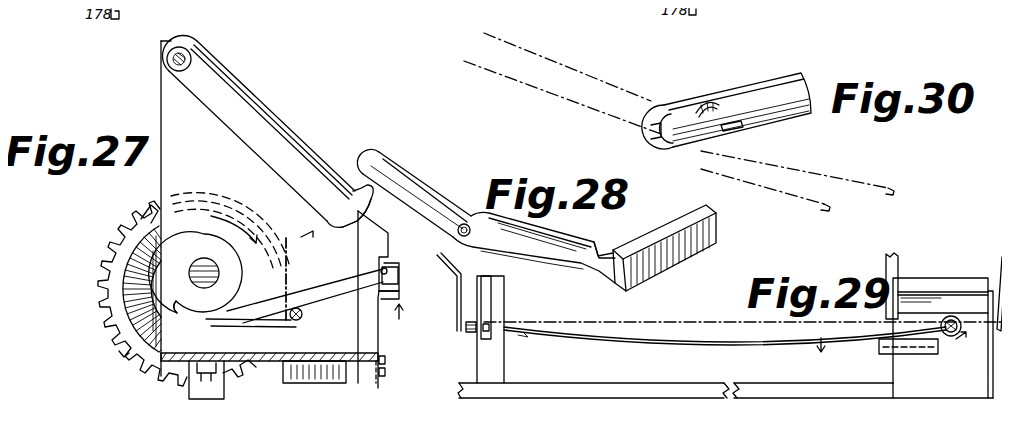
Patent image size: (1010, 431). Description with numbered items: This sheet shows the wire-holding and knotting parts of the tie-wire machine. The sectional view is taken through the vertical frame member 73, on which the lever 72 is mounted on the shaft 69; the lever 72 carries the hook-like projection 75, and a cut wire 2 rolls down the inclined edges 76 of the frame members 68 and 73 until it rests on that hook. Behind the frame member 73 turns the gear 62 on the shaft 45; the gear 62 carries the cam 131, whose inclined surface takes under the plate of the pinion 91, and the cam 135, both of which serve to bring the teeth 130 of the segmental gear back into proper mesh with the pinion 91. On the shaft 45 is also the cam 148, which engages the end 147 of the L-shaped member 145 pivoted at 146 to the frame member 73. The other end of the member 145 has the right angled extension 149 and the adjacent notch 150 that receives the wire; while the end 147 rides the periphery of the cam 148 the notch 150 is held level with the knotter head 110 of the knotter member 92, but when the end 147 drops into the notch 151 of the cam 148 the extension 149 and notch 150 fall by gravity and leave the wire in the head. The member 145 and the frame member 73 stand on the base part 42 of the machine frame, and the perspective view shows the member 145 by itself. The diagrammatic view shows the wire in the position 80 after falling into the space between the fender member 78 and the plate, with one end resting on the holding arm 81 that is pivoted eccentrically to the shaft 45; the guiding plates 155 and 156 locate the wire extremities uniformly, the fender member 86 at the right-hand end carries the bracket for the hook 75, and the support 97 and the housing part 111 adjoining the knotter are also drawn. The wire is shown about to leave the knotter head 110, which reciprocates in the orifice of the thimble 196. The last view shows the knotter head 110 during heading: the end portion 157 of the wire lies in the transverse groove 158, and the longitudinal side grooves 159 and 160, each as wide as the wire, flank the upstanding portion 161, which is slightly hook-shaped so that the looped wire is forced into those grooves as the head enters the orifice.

In FIG. 27, the wire 2 is at (384, 266).
In FIG. 29, the wire 2 is at (672, 342).
In FIG. 30, the wire 2 is at (576, 62).
In FIG. 27, the base plate 42 is at (300, 358).
In FIG. 29, the base plate 42 is at (603, 388).
In FIG. 27, the shaft 45 is at (210, 266).
In FIG. 27, the gear 62 is at (126, 354).
In FIG. 29, the frame member 68 is at (478, 358).
In FIG. 27, the shaft 69 is at (188, 53).
In FIG. 27, the lever 72 is at (232, 102).
In FIG. 27, the vertical frame member 73 is at (165, 106).
In FIG. 29, the vertical frame member 73 is at (905, 283).
In FIG. 27, the hook-like projection 75 is at (364, 200).
In FIG. 27, the inclined edges 76 is at (282, 130).
In FIG. 29, the fender member 78 is at (490, 293).
In FIG. 29, the wire position 80 is at (700, 312).
In FIG. 29, the holding arm 81 is at (467, 332).
In FIG. 29, the fender member 86 is at (884, 265).
In FIG. 27, the pinion 91 is at (310, 272).
In FIG. 30, the knotter member 92 is at (800, 82).
In FIG. 29, the support 97 is at (900, 376).
In FIG. 27, the knotter head 110 is at (388, 264).
In FIG. 29, the knotter head 110 is at (952, 316).
In FIG. 30, the knotter head 110 is at (724, 136).
In FIG. 29, the housing block 111 is at (988, 373).
In FIG. 27, the teeth 130 is at (120, 300).
In FIG. 27, the cam 131 is at (140, 200).
In FIG. 27, the cam 135 is at (238, 375).
In FIG. 27, the L-shaped member 145 is at (344, 288).
In FIG. 28, the L-shaped member 145 is at (540, 250).
In FIG. 27, the pivot 146 is at (300, 318).
In FIG. 28, the pivot 146 is at (465, 222).
In FIG. 27, the end 147 is at (206, 321).
In FIG. 28, the end 147 is at (378, 162).
In FIG. 27, the cam 148 is at (236, 280).
In FIG. 27, the right angled extension 149 is at (400, 273).
In FIG. 28, the right angled extension 149 is at (686, 252).
In FIG. 29, the right angled extension 149 is at (912, 352).
In FIG. 27, the notch 150 is at (400, 286).
In FIG. 28, the notch 150 is at (612, 249).
In FIG. 27, the notch 151 is at (182, 306).
In FIG. 29, the guiding plate 155 is at (455, 266).
In FIG. 29, the guiding plate 156 is at (1002, 260).
In FIG. 30, the end portion 157 is at (805, 160).
In FIG. 30, the transverse groove 158 is at (700, 104).
In FIG. 30, the side groove 159 is at (646, 132).
In FIG. 30, the side groove 160 is at (655, 150).
In FIG. 30, the upstanding portion 161 is at (660, 116).
In FIG. 29, the thimble 196 is at (959, 342).